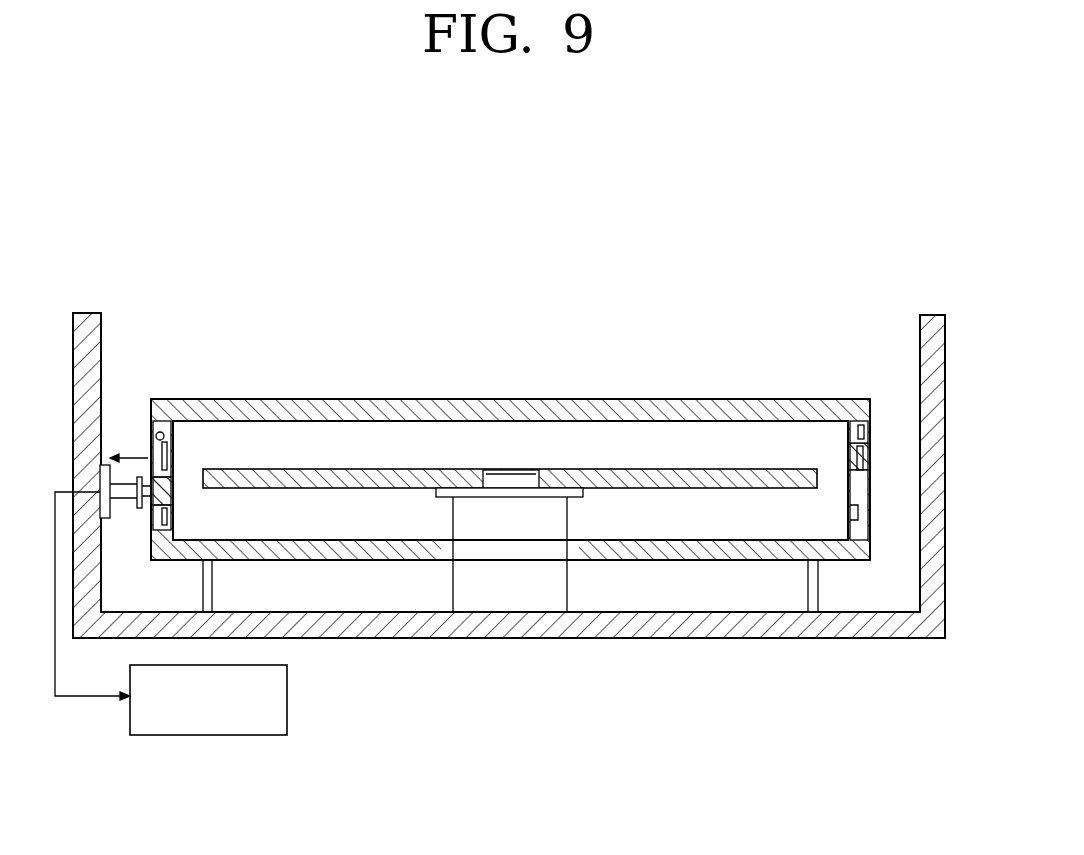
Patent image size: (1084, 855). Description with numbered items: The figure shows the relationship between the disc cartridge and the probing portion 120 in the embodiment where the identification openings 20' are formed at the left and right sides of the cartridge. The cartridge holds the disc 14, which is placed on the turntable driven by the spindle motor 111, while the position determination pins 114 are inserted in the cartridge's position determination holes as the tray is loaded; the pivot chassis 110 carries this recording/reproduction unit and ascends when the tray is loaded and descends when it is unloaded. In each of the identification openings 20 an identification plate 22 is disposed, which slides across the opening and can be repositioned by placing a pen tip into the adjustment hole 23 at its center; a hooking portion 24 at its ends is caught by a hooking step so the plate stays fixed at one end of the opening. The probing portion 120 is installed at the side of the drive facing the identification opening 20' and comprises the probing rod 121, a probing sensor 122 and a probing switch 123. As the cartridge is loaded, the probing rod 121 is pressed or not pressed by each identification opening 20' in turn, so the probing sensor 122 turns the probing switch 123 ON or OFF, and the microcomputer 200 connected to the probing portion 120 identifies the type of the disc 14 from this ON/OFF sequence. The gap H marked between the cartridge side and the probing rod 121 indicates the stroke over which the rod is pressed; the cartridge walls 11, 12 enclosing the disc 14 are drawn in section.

The pivot chassis 110 is at (718, 628).
The tray top wall 11 is at (447, 413).
The tray bottom wall 12 is at (856, 560).
The disc 14 is at (370, 468).
The spindle motor 111 is at (523, 602).
The position determination pins 114 is at (212, 586).
The probing rod 121 is at (158, 438).
The identification openings 20' is at (196, 451).
The identification plate 22 is at (166, 498).
The hooking portion 24 is at (858, 433).
The identification openings 20 is at (830, 505).
The adjustment hole 23 is at (860, 466).
The probing portion 120 is at (105, 460).
The gap distance H is at (129, 446).
The probing switch 123 is at (105, 520).
The probing sensor 122 is at (142, 508).
The microcomputer 200 is at (270, 735).